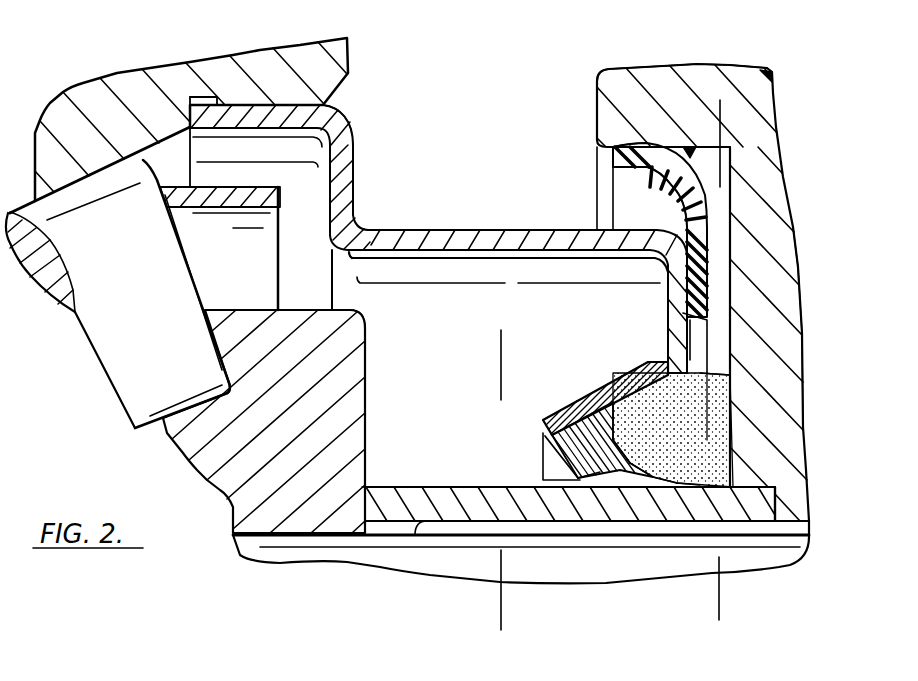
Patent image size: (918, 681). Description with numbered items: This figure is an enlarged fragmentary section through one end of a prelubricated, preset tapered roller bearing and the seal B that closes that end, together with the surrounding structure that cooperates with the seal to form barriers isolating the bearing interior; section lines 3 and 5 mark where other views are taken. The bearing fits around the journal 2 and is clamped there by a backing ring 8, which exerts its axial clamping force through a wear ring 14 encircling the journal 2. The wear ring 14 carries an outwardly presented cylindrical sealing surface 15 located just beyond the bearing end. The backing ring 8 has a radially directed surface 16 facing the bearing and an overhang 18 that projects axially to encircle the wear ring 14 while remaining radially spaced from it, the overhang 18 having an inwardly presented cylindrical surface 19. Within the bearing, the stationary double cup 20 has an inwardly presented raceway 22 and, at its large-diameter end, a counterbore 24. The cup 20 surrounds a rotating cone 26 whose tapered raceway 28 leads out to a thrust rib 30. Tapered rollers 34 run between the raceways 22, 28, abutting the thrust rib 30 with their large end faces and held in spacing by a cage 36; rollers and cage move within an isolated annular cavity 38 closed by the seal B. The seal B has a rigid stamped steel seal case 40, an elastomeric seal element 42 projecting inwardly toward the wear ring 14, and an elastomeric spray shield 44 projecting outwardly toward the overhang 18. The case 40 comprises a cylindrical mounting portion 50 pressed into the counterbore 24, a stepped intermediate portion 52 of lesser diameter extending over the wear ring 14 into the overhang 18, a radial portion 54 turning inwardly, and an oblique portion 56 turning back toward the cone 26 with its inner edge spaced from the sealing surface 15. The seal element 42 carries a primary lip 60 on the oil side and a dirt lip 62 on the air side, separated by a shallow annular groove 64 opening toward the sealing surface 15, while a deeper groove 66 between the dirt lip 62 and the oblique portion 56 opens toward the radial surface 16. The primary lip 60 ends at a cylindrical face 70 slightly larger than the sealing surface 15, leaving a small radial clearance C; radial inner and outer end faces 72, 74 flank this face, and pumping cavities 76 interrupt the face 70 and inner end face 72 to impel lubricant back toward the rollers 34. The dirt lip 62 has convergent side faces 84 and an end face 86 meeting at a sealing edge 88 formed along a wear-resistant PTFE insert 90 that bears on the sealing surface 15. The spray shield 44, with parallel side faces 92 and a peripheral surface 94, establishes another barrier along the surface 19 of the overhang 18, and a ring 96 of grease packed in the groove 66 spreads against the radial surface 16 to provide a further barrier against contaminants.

The journal 2 is at (263, 560).
The backing ring 8 is at (767, 147).
The wear ring 14 is at (390, 490).
The sealing surface 15 is at (388, 487).
The radially directed surface 16 is at (722, 235).
The overhang 18 is at (613, 90).
The inwardly presented surface 19 is at (695, 150).
The double cup 20 is at (80, 85).
The cup raceway 22 is at (107, 180).
The counterbore 24 is at (330, 107).
The cone 26 is at (213, 460).
The cone raceway 28 is at (188, 404).
The thrust rib 30 is at (270, 332).
The tapered roller 34 is at (107, 355).
The cage 36 is at (222, 200).
The annular cavity 38 is at (175, 150).
The seal case 40 is at (370, 163).
The seal element 42 is at (580, 385).
The spray shield 44 is at (724, 194).
The mounting portion 50 is at (247, 110).
The intermediate portion 52 is at (447, 227).
The radial portion 54 is at (667, 285).
The oblique portion 56 is at (607, 393).
The primary lip 60 is at (543, 430).
The dirt lip 62 is at (640, 452).
The shallow annular groove 64 is at (600, 485).
The deep annular groove 66 is at (655, 432).
The cylindrical face 70 is at (557, 487).
The inner end face 72 is at (547, 432).
The outer end face 74 is at (590, 483).
The pumping cavity 76 is at (550, 463).
The side face 84 is at (712, 440).
The end face 86 is at (712, 448).
The sealing edge 88 is at (698, 517).
The annular insert 90 is at (672, 450).
The side face 92 is at (677, 213).
The peripheral surface 94 is at (613, 157).
The grease ring 96 is at (700, 468).
The seal B is at (500, 195).
The radial clearance C is at (570, 487).
The section line 3 is at (462, 353).
The section line 5 is at (762, 112).